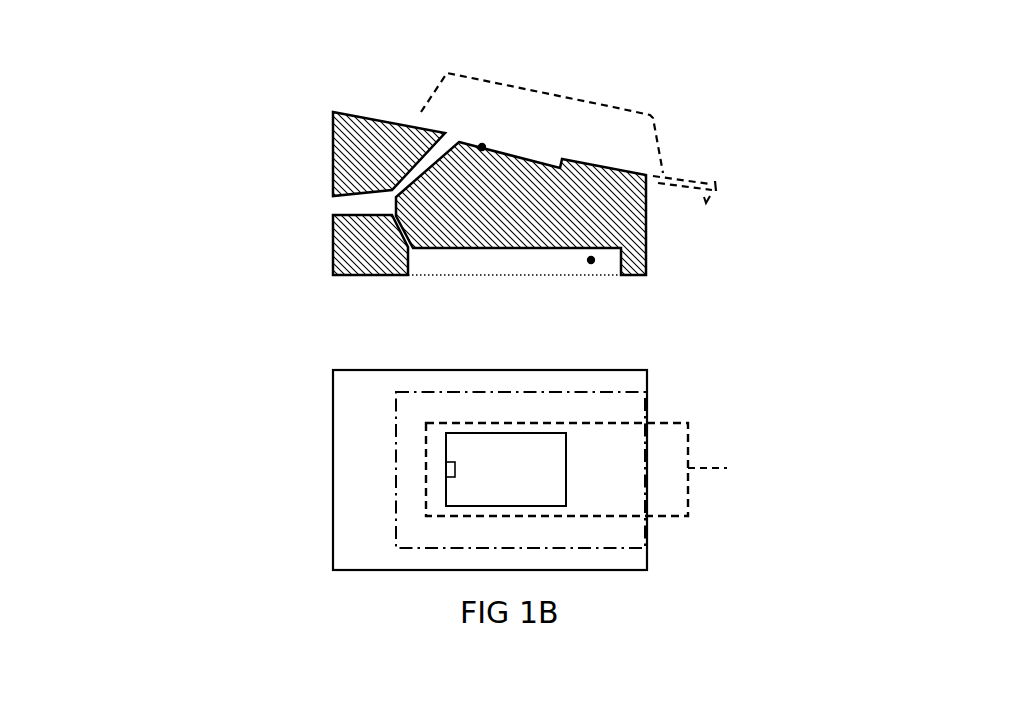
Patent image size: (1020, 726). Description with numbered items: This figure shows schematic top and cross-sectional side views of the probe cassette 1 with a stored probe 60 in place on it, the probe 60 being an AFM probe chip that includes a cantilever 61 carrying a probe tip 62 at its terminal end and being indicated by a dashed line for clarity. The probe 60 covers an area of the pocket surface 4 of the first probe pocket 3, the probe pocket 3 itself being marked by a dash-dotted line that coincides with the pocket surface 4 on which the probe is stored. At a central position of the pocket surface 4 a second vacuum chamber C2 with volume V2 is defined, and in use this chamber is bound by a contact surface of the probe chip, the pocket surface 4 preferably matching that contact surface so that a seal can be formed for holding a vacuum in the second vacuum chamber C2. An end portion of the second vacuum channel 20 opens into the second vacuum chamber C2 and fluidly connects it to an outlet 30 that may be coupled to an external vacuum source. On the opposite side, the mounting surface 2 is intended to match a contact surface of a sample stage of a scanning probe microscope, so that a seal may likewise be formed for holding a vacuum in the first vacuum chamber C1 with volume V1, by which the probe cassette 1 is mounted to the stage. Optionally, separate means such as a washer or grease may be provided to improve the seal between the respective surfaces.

The probe cassette 1 is at (136, 111).
The mounting surface 2 is at (352, 290).
The first probe pocket 3 is at (634, 552).
The pocket surface 4 is at (375, 110).
The second vacuum channel 20 is at (392, 181).
The outlet 30 is at (324, 204).
The probe 60 is at (626, 101).
The cantilever 61 is at (702, 169).
The probe tip 62 is at (727, 192).
The first vacuum chamber C1 is at (435, 261).
The second vacuum chamber C2 is at (450, 141).
The volume V1 is at (591, 260).
The volume V2 is at (482, 147).